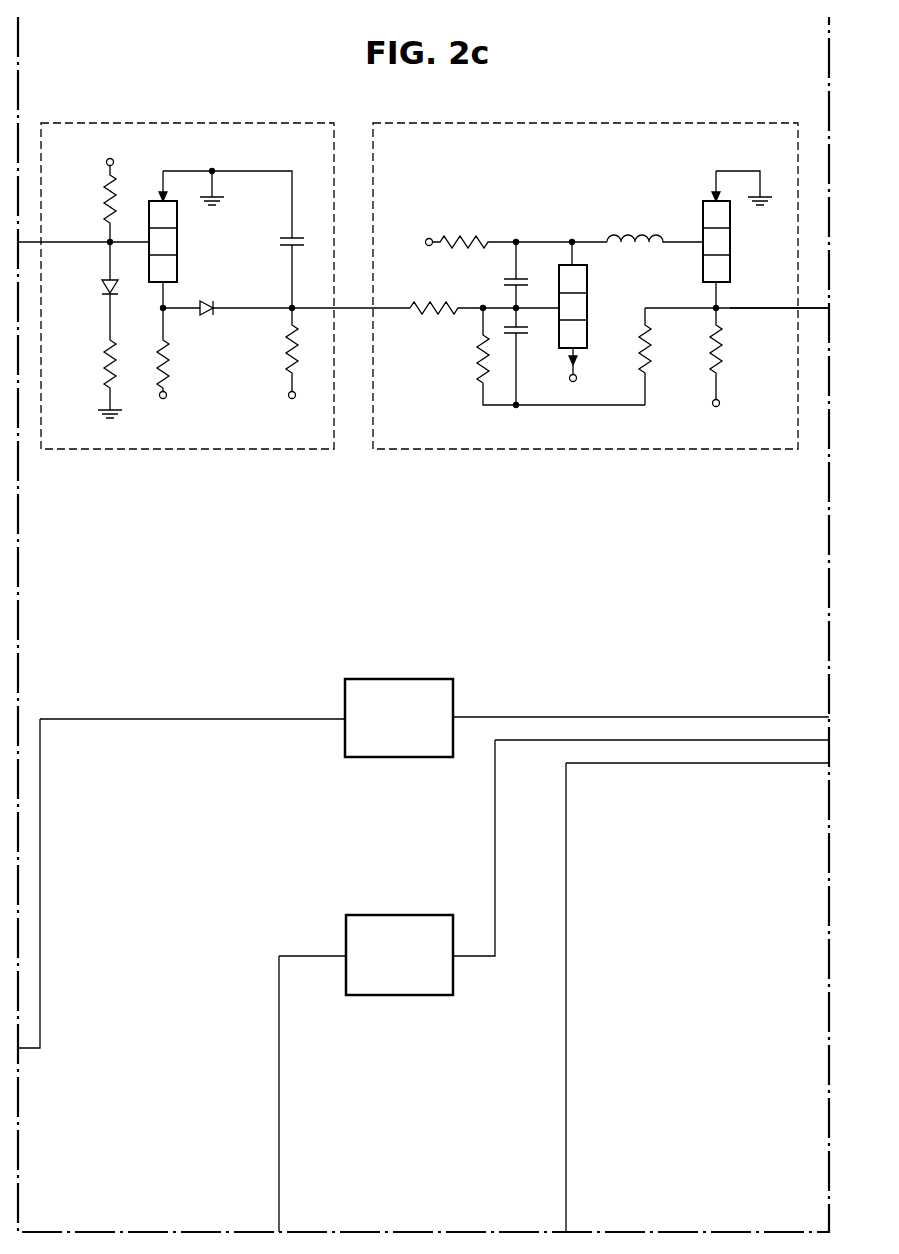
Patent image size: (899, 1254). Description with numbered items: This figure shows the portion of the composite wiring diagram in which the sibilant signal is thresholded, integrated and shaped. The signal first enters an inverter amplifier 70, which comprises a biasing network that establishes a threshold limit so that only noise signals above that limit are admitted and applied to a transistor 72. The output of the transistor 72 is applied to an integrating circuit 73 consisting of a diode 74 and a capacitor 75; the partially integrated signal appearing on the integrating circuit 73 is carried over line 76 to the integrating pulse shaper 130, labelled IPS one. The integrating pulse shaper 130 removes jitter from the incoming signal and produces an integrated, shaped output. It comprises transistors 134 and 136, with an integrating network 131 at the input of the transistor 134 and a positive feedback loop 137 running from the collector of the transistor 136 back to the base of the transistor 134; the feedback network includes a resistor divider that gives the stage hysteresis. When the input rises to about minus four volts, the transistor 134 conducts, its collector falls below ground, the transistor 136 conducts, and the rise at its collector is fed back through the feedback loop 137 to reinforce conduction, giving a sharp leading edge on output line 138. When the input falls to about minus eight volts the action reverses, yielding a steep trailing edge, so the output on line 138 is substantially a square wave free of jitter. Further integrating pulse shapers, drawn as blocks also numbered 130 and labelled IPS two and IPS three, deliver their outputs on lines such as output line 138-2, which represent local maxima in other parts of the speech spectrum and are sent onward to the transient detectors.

The inverter amplifier 70 is at (192, 450).
The transistor 72 is at (177, 242).
The integrating circuit 73 is at (272, 327).
The diode 74 is at (206, 298).
The capacitor 75 is at (296, 240).
The interconnecting line 76 is at (359, 311).
The integrating pulse shaper 130 is at (582, 450).
The integrating network 131 is at (484, 292).
The transistor 134 is at (587, 311).
The transistor 136 is at (730, 242).
The feedback loop 137 is at (680, 308).
The output line 138 is at (776, 308).
The output line 138-2 is at (697, 717).